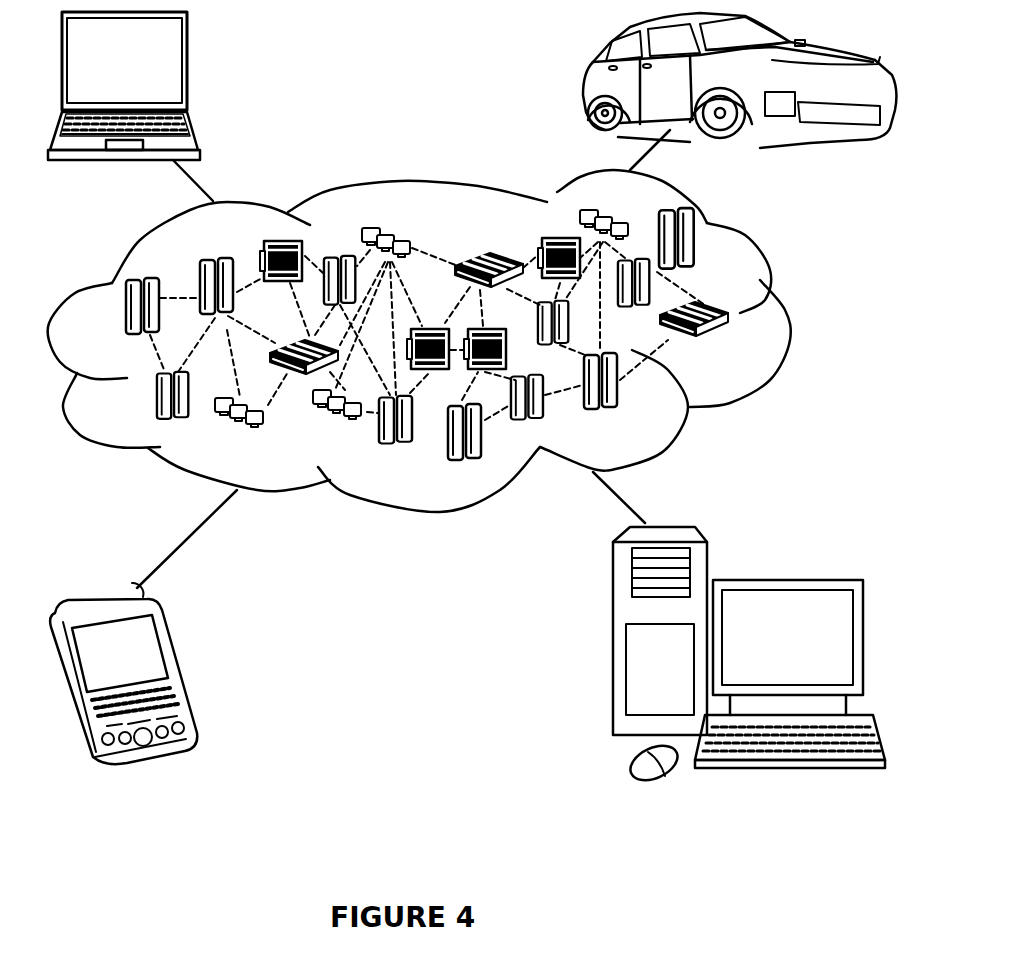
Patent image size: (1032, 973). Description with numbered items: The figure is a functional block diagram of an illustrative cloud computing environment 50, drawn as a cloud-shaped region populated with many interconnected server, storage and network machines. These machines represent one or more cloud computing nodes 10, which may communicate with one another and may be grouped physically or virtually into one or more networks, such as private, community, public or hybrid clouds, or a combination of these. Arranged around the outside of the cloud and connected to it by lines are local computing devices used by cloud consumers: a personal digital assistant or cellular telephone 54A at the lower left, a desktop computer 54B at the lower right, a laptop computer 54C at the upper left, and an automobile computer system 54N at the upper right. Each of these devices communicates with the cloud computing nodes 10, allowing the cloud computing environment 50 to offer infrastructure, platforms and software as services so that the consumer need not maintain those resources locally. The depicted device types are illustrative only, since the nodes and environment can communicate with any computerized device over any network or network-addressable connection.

The laptop computer 54C is at (187, 68).
The automobile computer system 54N is at (585, 83).
The cloud computing environment 50 is at (788, 317).
The cloud computing node 10 is at (740, 345).
The personal digital assistant or cellular telephone 54A is at (178, 667).
The desktop computer 54B is at (786, 580).